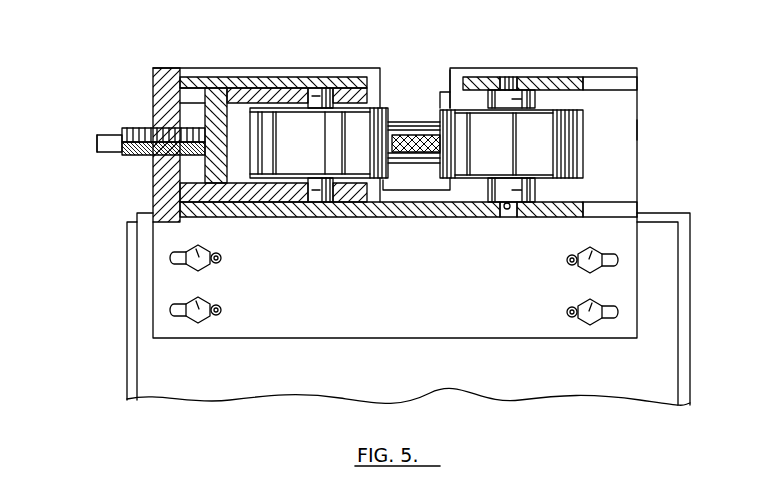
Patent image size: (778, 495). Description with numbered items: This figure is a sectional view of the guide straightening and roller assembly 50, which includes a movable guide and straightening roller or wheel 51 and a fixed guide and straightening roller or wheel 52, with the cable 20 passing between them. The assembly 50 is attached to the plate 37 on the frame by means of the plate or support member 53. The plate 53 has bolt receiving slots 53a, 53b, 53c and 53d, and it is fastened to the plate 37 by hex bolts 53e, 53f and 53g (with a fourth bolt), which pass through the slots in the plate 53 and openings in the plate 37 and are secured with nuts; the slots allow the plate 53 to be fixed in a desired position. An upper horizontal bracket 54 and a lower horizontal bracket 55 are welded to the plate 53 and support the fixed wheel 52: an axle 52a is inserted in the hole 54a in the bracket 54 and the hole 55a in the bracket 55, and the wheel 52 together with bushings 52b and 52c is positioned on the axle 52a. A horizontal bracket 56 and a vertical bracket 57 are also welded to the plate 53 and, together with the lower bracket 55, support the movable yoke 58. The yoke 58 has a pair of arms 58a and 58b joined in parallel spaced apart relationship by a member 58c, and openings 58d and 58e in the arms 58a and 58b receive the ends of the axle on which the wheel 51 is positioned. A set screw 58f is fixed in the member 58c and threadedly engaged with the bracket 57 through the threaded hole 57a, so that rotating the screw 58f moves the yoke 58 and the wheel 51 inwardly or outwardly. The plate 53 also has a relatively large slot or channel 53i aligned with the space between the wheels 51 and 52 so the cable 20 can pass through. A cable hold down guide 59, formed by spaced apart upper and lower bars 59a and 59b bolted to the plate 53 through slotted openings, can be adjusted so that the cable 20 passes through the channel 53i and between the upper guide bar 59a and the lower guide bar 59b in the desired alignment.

The cable 20 is at (431, 110).
The plate 37 is at (590, 384).
The guide straightening and roller assembly 50 is at (646, 131).
The movable guide and straightening roller 51 is at (307, 152).
The fixed guide and straightening roller 52 is at (552, 144).
The axle 52a is at (506, 80).
The bushing 52b is at (536, 101).
The bushing 52c is at (536, 186).
The plate 53 is at (348, 70).
The bolt receiving slot 53a is at (567, 259).
The bolt receiving slot 53b is at (202, 308).
The bolt receiving slot 53c is at (284, 263).
The bolt receiving slot 53d is at (280, 323).
The hex bolt 53e is at (632, 241).
The hex bolt 53f is at (633, 291).
The hex bolt 53g is at (244, 234).
The slot or channel 53i is at (450, 70).
The upper horizontal bracket 54 is at (556, 86).
The hole 54a is at (512, 80).
The lower horizontal bracket 55 is at (550, 215).
The hole 55a is at (500, 217).
The horizontal bracket 56 is at (285, 82).
The vertical bracket 57 is at (167, 99).
The threaded hole 57a is at (152, 136).
The movable yoke 58 is at (190, 171).
The arm 58a is at (268, 92).
The arm 58b is at (275, 192).
The member 58c is at (216, 100).
The opening 58d is at (322, 95).
The opening 58e is at (325, 200).
The set screw 58f is at (97, 143).
The cable hold down guide 59 is at (432, 112).
The upper guide bar 59a is at (400, 124).
The lower guide bar 59b is at (410, 163).